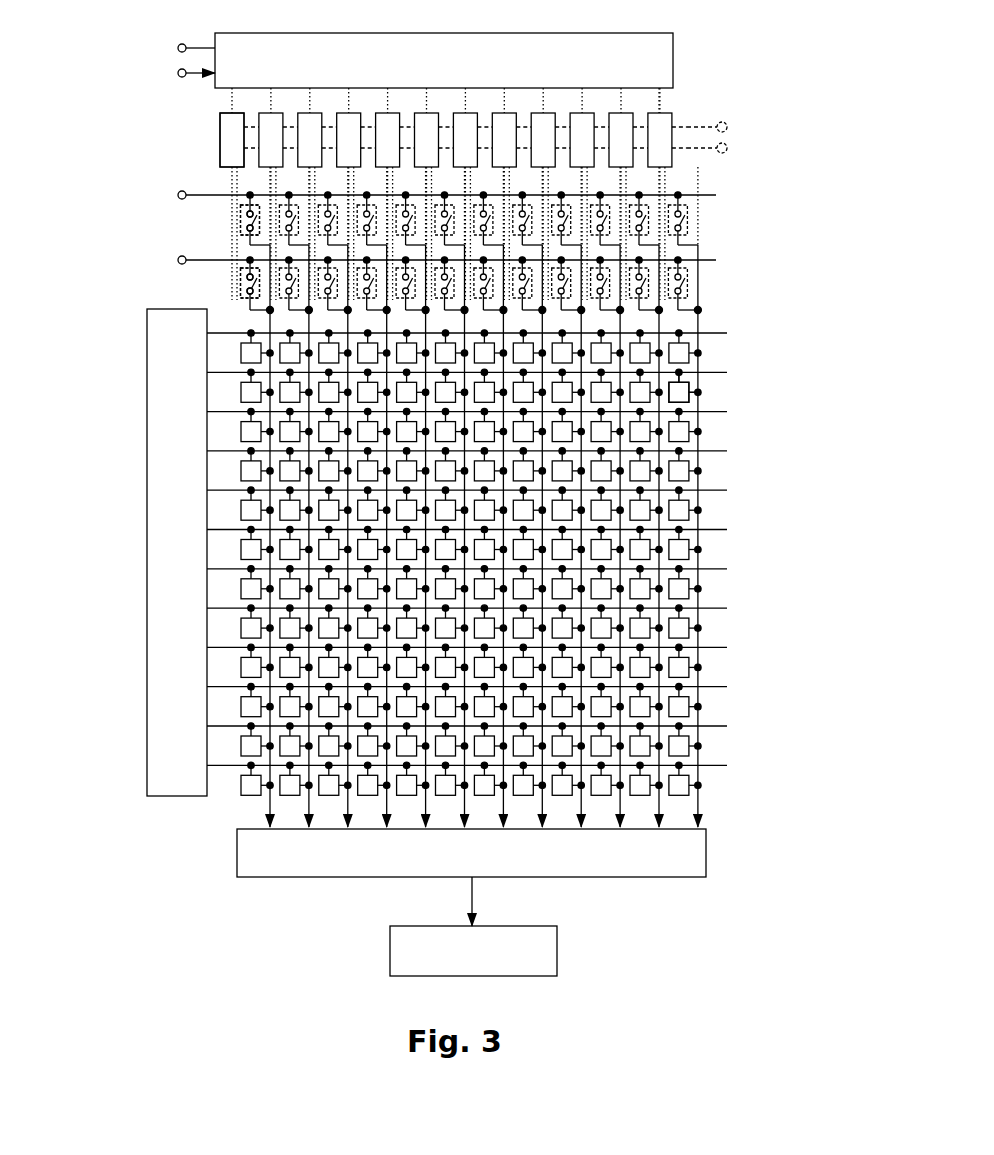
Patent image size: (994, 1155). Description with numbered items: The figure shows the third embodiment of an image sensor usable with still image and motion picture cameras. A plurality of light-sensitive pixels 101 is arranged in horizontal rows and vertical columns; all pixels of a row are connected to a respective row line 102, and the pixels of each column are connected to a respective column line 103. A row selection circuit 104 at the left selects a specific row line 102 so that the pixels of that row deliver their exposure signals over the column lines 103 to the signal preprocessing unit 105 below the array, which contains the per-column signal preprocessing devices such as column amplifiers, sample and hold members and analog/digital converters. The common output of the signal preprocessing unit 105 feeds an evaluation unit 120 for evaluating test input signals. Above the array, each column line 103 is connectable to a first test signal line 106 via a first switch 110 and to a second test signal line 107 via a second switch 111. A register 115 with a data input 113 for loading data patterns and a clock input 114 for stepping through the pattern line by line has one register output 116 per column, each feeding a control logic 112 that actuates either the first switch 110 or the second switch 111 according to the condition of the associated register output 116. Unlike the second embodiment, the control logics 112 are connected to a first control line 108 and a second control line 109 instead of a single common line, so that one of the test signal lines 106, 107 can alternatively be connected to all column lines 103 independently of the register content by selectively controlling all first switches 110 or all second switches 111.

The light-sensitive pixel 101 is at (694, 385).
The row line 102 is at (734, 455).
The column line 103 is at (704, 578).
The row selection circuit 104 is at (146, 391).
The signal preprocessing unit 105 is at (228, 857).
The first test signal line 106 is at (177, 195).
The second test signal line 107 is at (177, 260).
The first control line 108 is at (733, 127).
The second control line 109 is at (733, 153).
The first switch 110 is at (238, 231).
The second switch 111 is at (238, 294).
The control logic 112 is at (218, 140).
The data input 113 is at (177, 47).
The clock input 114 is at (177, 73).
The register 115 is at (676, 50).
The register output 116 is at (662, 97).
The evaluation unit 120 is at (564, 945).